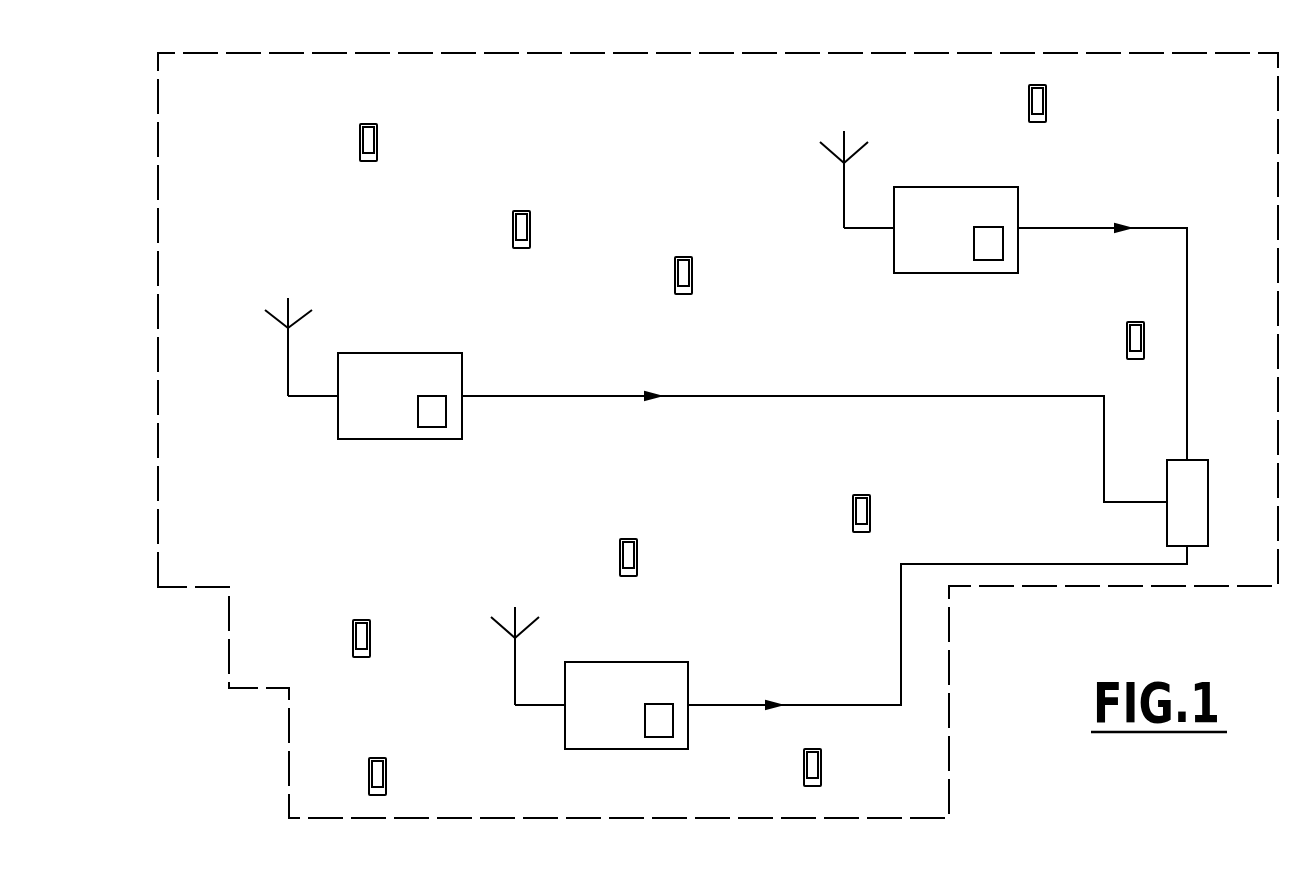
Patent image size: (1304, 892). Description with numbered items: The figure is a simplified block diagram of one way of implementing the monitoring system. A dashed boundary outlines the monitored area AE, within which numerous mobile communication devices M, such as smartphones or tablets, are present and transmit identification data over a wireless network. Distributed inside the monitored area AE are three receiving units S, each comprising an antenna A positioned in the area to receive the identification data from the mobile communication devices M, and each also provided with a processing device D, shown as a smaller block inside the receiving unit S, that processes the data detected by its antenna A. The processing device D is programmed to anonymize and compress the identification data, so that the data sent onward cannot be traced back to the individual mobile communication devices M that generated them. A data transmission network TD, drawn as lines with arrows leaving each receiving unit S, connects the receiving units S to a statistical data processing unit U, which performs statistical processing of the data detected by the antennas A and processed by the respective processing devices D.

The antenna A is at (283, 355).
The receiving unit S is at (347, 428).
The processing device D is at (428, 414).
The data transmission network TD is at (551, 396).
The mobile communication devices M is at (359, 142).
The statistical data processing unit U is at (1196, 484).
The monitored area AE is at (925, 775).